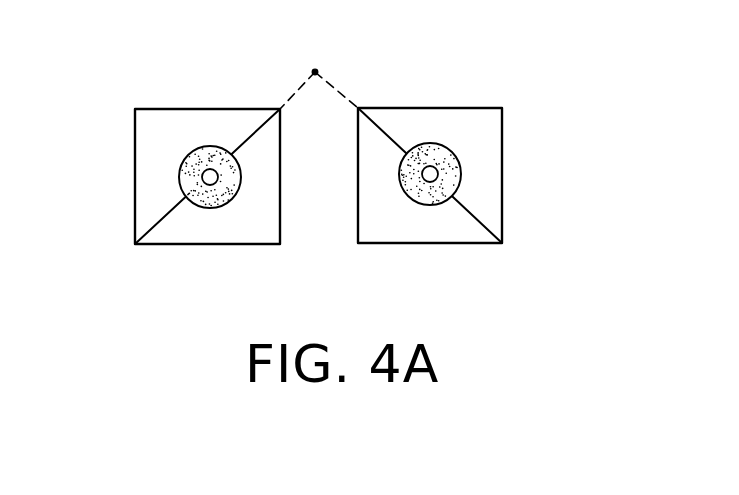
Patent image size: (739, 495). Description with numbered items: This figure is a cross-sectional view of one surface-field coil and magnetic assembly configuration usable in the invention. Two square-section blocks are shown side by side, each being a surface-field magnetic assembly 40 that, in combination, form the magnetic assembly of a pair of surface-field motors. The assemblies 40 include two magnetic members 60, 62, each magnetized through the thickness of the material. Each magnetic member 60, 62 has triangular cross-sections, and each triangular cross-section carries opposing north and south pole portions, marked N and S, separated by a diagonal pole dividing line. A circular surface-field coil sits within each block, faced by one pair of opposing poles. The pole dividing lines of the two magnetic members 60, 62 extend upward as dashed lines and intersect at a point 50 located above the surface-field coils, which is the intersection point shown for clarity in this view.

The surface-field magnetic assembly 40 is at (264, 87).
The intersection point 50 is at (315, 72).
The magnetic member 60 is at (198, 109).
The magnetic member 62 is at (466, 108).